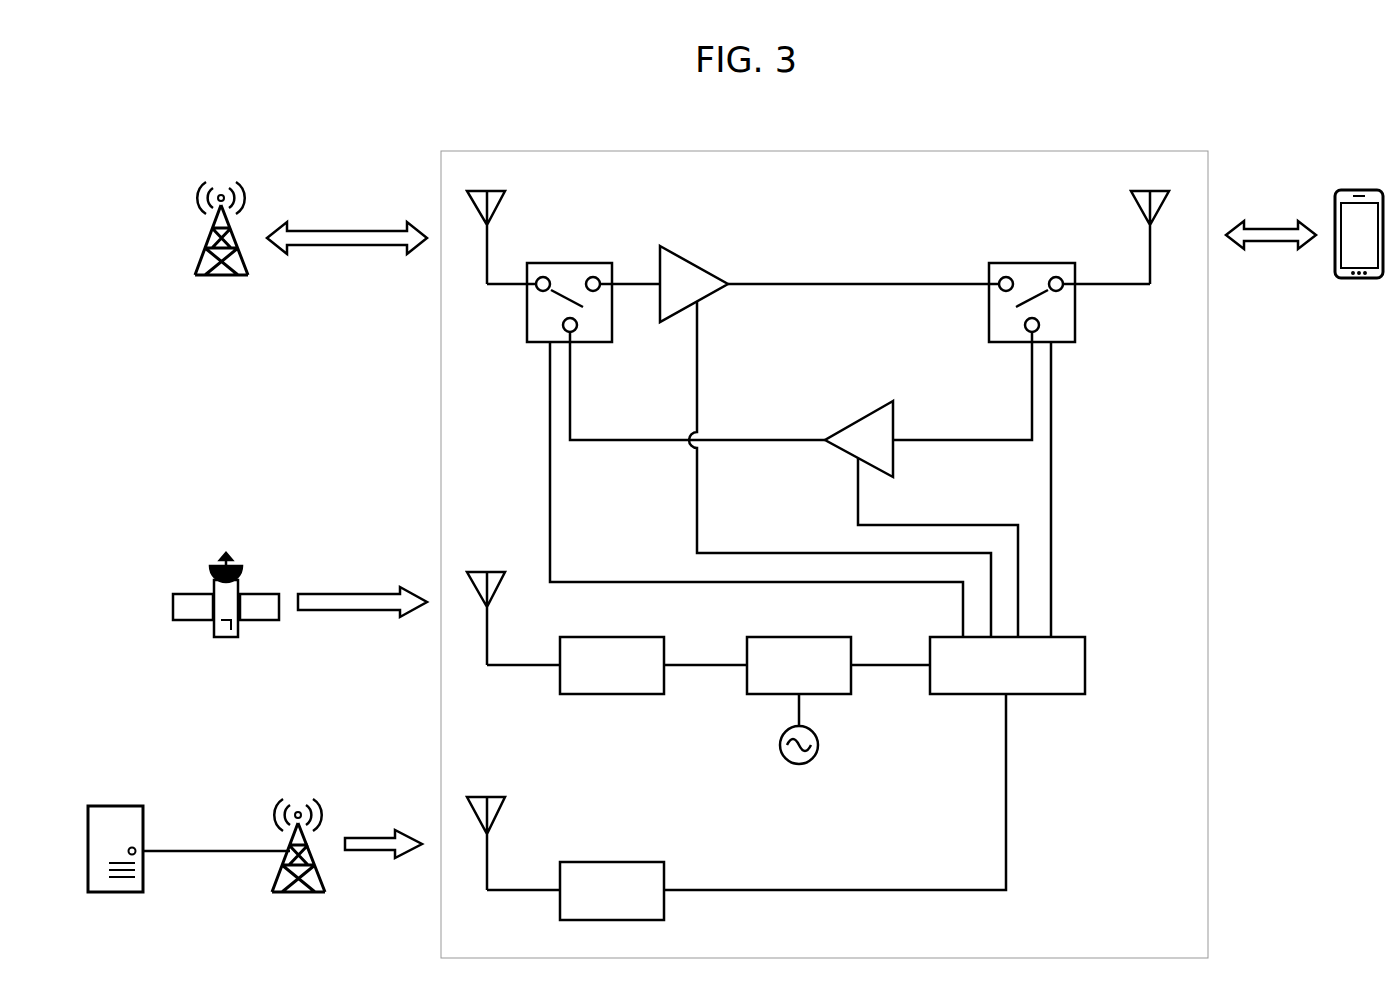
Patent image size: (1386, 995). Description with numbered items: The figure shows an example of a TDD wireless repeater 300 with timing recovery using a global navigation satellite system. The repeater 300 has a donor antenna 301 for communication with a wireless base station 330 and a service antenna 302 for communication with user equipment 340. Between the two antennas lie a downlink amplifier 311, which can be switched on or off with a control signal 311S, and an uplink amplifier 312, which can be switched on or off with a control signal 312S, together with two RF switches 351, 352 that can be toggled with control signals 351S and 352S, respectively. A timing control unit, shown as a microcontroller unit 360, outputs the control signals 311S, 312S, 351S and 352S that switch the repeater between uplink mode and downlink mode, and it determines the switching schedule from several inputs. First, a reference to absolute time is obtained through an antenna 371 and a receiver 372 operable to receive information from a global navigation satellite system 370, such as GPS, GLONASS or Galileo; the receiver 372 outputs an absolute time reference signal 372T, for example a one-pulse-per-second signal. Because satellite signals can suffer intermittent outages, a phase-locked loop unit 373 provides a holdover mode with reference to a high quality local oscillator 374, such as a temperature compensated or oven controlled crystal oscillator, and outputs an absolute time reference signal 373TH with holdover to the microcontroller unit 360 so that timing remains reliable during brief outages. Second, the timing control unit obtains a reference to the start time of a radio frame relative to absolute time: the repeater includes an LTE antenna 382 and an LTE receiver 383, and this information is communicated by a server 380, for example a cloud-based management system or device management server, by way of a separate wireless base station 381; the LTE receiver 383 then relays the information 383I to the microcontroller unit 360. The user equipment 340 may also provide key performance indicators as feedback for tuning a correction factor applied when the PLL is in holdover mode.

The wireless repeater 300 is at (491, 149).
The donor antenna 301 is at (486, 224).
The service antenna 302 is at (1150, 224).
The downlink amplifier 311 is at (698, 280).
The uplink amplifier 312 is at (856, 435).
The control signal 311S is at (840, 469).
The control signal 312S is at (938, 547).
The wireless base station 330 is at (221, 214).
The user equipment 340 is at (1359, 219).
The RF switch 351 is at (569, 290).
The RF switch 352 is at (1032, 290).
The control signal 351S is at (756, 489).
The control signal 352S is at (1078, 489).
The microcontroller unit 360 is at (1031, 665).
The global navigation satellite system 370 is at (226, 580).
The antenna 371 is at (486, 606).
The receiver 372 is at (612, 654).
The absolute time reference signal 372T is at (705, 680).
The phase-locked loop unit 373 is at (799, 654).
The absolute time reference signal with holdover 373TH is at (890, 680).
The local oscillator 374 is at (822, 729).
The server 380 is at (115, 837).
The wireless base station 381 is at (298, 830).
The LTE antenna 382 is at (486, 831).
The LTE receiver 383 is at (612, 879).
The information 383I is at (835, 792).